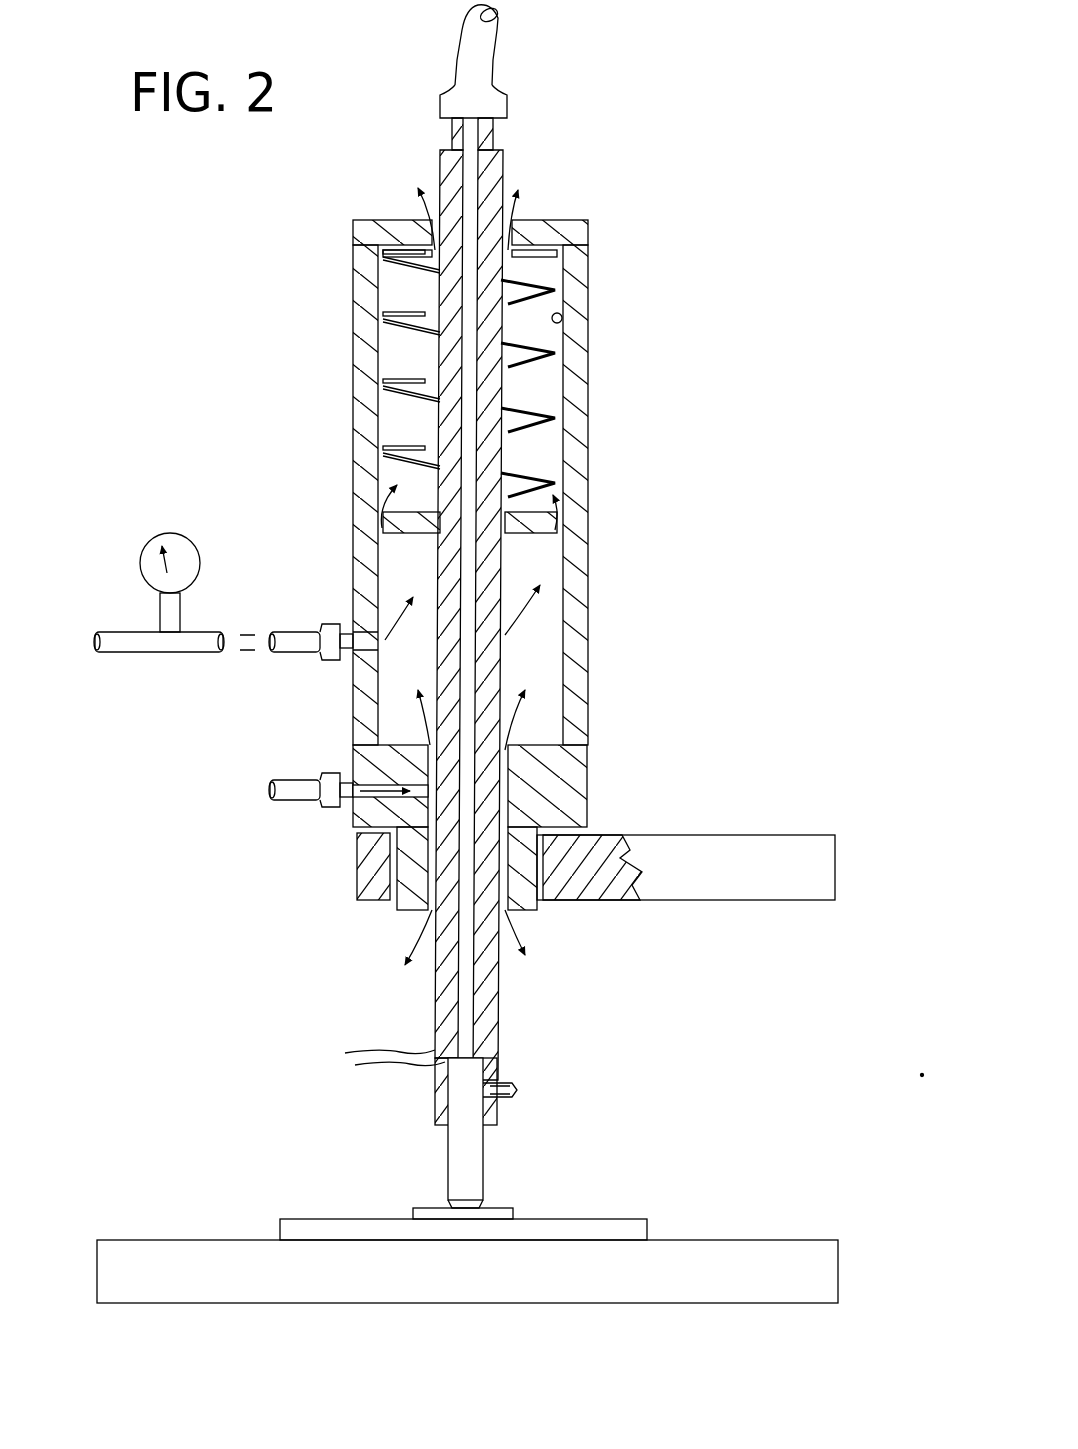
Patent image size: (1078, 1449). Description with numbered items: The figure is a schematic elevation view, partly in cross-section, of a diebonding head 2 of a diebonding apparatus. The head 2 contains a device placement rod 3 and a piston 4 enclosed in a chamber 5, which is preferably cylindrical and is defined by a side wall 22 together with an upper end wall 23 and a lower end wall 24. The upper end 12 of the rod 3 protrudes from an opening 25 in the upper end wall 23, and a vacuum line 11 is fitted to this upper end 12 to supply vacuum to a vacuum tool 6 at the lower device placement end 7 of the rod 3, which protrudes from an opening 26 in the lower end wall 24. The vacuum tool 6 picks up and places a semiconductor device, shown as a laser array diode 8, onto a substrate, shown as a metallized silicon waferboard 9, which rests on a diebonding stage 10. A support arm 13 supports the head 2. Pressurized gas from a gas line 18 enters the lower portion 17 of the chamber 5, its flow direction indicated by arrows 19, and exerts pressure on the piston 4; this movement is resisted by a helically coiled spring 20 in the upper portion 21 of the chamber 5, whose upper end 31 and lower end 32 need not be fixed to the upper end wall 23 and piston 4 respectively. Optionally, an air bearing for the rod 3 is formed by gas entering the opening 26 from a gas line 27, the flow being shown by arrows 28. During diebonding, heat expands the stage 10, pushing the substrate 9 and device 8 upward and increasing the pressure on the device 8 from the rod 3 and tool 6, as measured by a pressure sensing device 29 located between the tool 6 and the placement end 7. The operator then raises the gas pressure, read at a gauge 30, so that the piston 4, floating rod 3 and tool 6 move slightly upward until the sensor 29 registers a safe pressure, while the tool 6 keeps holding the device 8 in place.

The diebonding head 2 is at (632, 555).
The device placement rod 3 is at (508, 175).
The piston 4 is at (548, 440).
The chamber 5 is at (548, 683).
The vacuum tool 6 is at (487, 1160).
The device placement end 7 is at (505, 1020).
The laser array diode 8 is at (518, 1208).
The metallized silicon waferboard 9 is at (645, 1219).
The diebonding stage 10 is at (745, 1240).
The vacuum line 11 is at (457, 42).
The upper end of rod 12 is at (495, 130).
The support arm 13 is at (748, 835).
The lower portion of chamber 17 is at (545, 633).
The gas line 18 is at (280, 655).
The arrows 19 is at (378, 533).
The helically coiled spring 20 is at (408, 392).
The upper portion of chamber 21 is at (548, 385).
The side wall 22 is at (562, 316).
The upper end wall 23 is at (575, 265).
The lower end wall 24 is at (370, 720).
The opening in upper end wall 25 is at (440, 220).
The opening in lower end wall 26 is at (550, 772).
The gas line 27 is at (300, 803).
The arrows 28 is at (548, 722).
The pressure sensing device 29 is at (462, 1058).
The gauge 30 is at (158, 585).
The upper end of spring 31 is at (545, 248).
The lower end of spring 32 is at (543, 497).